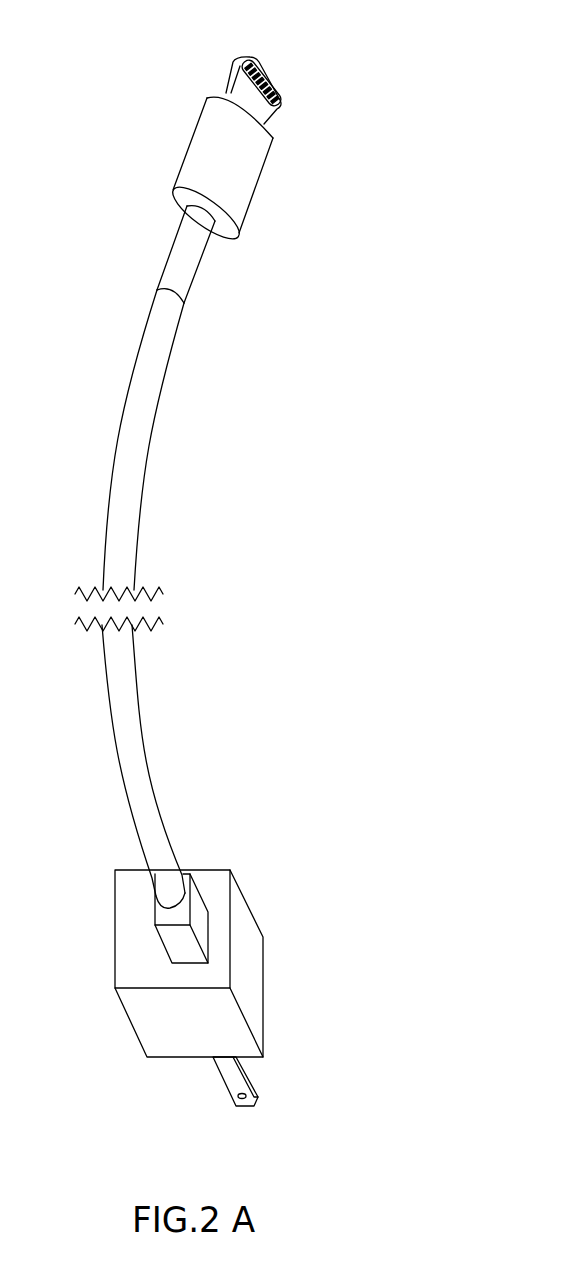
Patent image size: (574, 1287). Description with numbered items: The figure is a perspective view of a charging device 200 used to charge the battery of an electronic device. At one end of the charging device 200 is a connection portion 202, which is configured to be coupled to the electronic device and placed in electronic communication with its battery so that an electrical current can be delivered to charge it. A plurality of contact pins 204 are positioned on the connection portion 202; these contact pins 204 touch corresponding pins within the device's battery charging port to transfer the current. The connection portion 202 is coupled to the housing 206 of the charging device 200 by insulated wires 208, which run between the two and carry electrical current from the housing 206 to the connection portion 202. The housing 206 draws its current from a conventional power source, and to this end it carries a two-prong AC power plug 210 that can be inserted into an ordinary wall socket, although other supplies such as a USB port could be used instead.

The charging device 200 is at (259, 554).
The connection portion 202 is at (270, 153).
The contact pins 204 is at (271, 83).
The housing 206 is at (237, 977).
The insulated wires 208 is at (130, 528).
The two-prong AC power plug 210 is at (293, 1075).